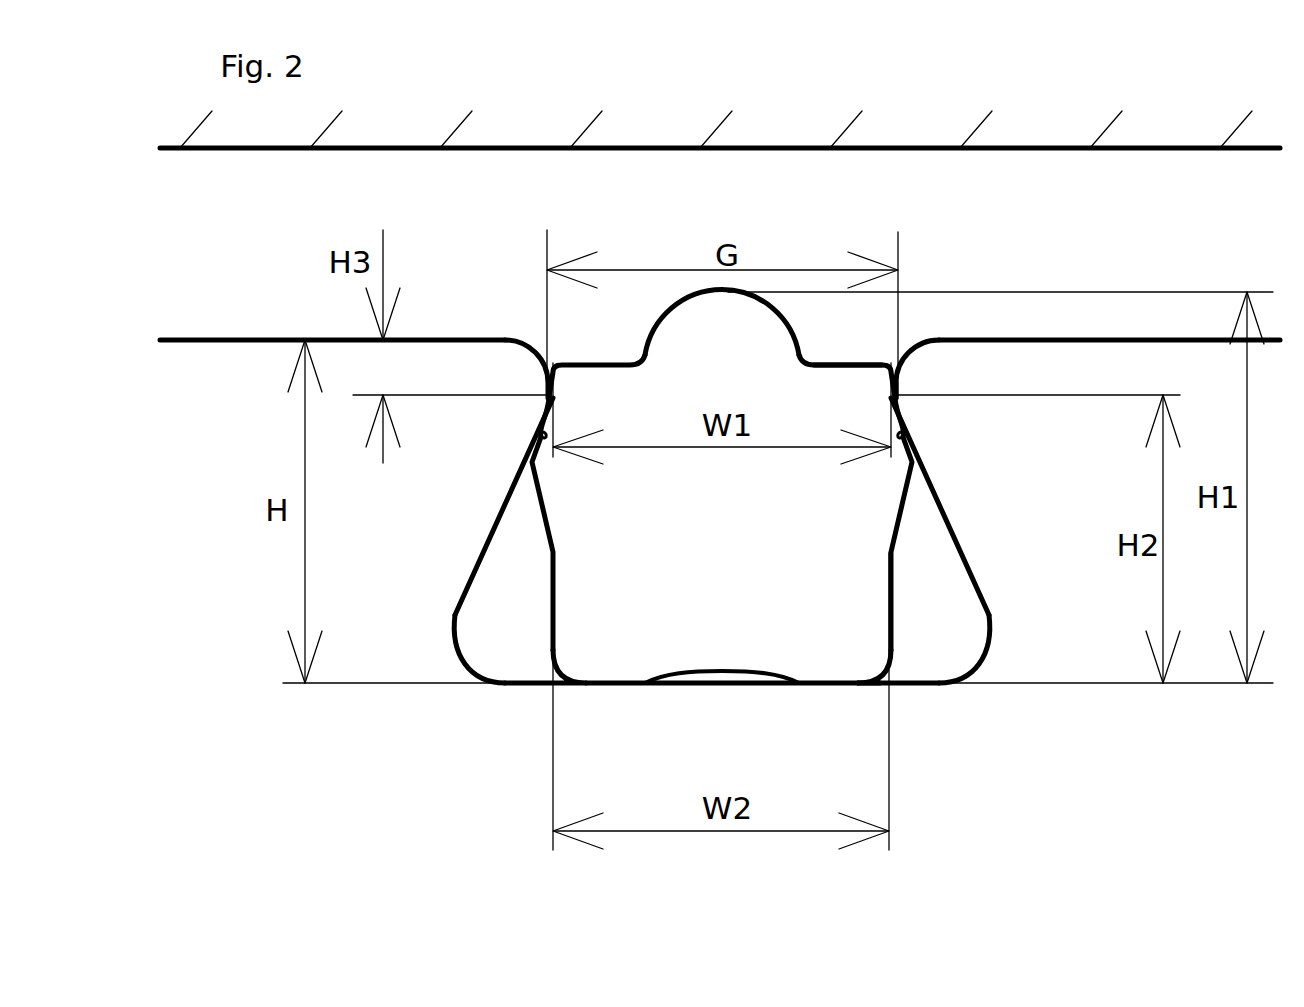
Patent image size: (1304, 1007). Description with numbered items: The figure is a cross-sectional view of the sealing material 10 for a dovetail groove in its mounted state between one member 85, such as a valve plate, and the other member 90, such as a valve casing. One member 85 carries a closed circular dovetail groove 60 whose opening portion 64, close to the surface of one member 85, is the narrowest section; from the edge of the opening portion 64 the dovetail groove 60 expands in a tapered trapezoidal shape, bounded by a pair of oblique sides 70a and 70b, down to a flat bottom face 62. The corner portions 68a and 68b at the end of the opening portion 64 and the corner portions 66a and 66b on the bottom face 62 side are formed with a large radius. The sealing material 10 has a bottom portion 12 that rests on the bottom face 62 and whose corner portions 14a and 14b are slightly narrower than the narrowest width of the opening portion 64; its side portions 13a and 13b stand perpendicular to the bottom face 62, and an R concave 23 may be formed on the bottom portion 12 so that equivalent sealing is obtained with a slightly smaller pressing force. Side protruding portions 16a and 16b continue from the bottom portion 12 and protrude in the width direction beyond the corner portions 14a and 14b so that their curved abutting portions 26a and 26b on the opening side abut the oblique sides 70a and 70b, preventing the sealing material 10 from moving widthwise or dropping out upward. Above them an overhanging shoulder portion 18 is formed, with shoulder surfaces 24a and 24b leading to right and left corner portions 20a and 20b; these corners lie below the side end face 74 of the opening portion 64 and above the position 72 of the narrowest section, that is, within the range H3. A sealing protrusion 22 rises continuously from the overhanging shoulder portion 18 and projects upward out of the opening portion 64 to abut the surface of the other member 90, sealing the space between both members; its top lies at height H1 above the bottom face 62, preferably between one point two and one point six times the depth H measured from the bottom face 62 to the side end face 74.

The sealing material for a dovetail groove 10 is at (719, 515).
The bottom portion 12 is at (632, 652).
The side portion of the bottom portion 13a is at (466, 623).
The side portion of the bottom portion 13b is at (975, 623).
The corner portion of the bottom portion 14a is at (567, 653).
The corner portion of the bottom portion 14b is at (873, 682).
The side protruding portion 16a is at (540, 492).
The side protruding portion 16b is at (905, 493).
The overhanging shoulder portion 18 is at (850, 372).
The corner portion of the overhanging shoulder portion 20a is at (486, 346).
The corner portion of the overhanging shoulder portion 20b is at (960, 347).
The sealing protrusion 22 is at (722, 290).
The concave 23 is at (725, 675).
The first shoulder surface 24a is at (558, 367).
The second shoulder surface 24b is at (883, 367).
The abutting portion 26a is at (540, 435).
The abutting portion 26b is at (903, 435).
The dovetail groove 60 is at (720, 395).
The bottom face 62 is at (910, 663).
The opening portion 64 is at (905, 360).
The corner portion 66a is at (462, 662).
The corner portion 66b is at (980, 663).
The corner portion 68a is at (537, 362).
The corner portion 68b is at (923, 360).
The oblique side 70a is at (497, 505).
The oblique side 70b is at (943, 503).
The position of the narrowest section 72 is at (367, 397).
The side end face of the opening portion 74 is at (1097, 338).
The one member 85 is at (248, 352).
The other member 90 is at (280, 138).